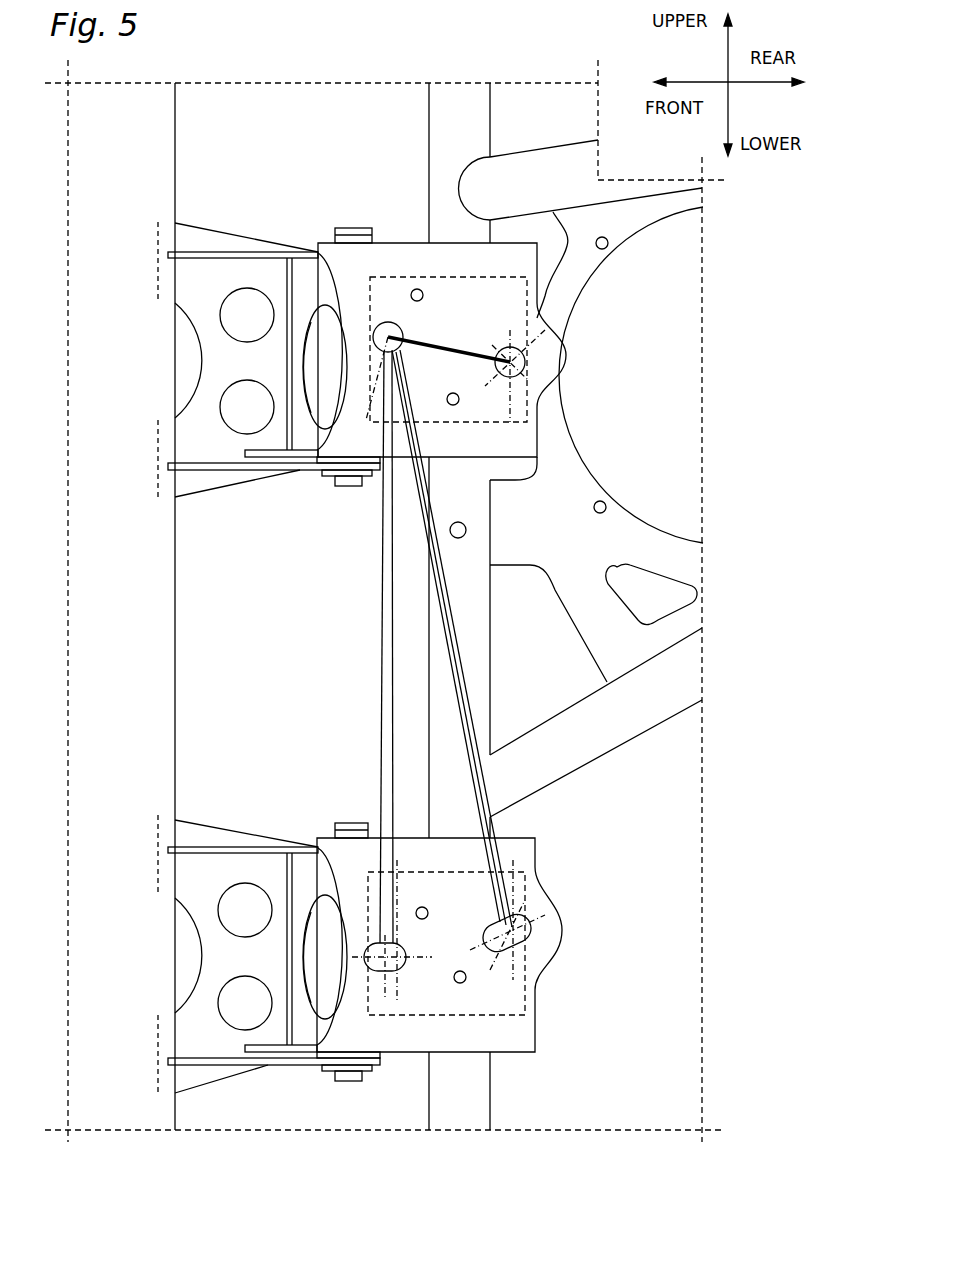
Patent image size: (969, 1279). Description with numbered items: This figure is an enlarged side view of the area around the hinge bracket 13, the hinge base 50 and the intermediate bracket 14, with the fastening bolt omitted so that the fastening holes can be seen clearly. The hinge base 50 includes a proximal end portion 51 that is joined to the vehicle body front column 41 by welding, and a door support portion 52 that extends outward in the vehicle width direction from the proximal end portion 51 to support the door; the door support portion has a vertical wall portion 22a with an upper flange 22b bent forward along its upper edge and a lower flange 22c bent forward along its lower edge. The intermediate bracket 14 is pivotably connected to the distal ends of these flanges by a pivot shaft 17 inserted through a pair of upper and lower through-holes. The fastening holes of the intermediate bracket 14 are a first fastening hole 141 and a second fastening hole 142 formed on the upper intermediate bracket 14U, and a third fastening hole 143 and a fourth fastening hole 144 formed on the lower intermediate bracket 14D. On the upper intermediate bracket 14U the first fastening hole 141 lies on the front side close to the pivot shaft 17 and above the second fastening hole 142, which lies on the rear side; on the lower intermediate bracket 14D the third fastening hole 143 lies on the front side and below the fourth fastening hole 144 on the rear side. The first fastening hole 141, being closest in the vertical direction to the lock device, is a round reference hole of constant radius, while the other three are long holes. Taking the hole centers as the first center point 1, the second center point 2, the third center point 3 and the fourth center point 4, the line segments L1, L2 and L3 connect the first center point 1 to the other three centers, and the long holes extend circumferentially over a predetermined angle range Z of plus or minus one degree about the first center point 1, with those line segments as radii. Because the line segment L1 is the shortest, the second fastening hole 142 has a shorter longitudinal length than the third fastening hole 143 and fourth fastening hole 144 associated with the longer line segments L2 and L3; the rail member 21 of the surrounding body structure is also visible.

The rail (frame member) 21 is at (482, 125).
The hinge bracket 13 is at (548, 400).
The vehicle body front column 41 is at (160, 588).
The hinge base 50 is at (246, 625).
The proximal end portion 51 is at (217, 250).
The door support portion 52 is at (315, 250).
The wheel body 22a is at (306, 340).
The upper flange 22b is at (317, 250).
The lower flange 22c is at (302, 476).
The pivot shaft 17 is at (346, 230).
The intermediate bracket 14 is at (467, 614).
The upper intermediate bracket 14U is at (442, 585).
The lower intermediate bracket 14D is at (467, 935).
The first fastening hole 141 is at (381, 324).
The second fastening hole 142 is at (513, 378).
The third fastening hole 143 is at (365, 945).
The fourth fastening hole 144 is at (548, 910).
The line segment L1 is at (486, 344).
The line segment L2 is at (378, 940).
The line segment L3 is at (508, 840).
The predetermined angle range Z is at (465, 671).
The center point O1 1 is at (425, 296).
The center point O2 2 is at (460, 400).
The center point O3 3 is at (429, 914).
The center point O4 4 is at (467, 978).